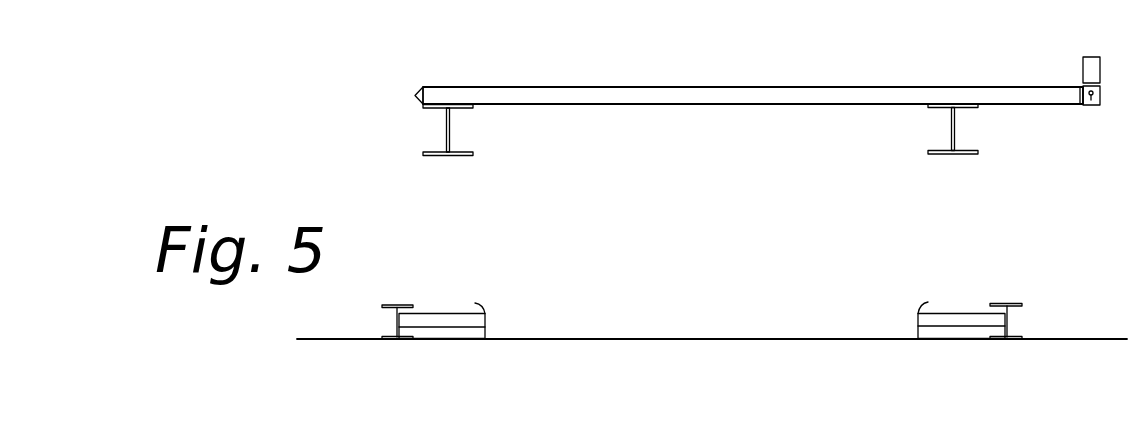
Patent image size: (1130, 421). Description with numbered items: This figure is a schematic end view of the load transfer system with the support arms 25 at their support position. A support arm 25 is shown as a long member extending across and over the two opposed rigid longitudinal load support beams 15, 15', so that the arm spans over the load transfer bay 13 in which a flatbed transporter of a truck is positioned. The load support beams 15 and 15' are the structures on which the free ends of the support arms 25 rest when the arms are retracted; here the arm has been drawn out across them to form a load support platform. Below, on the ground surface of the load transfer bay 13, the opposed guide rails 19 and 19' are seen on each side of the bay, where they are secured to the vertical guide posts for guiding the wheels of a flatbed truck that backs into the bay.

The support arm 25 is at (548, 87).
The load support beam 15' is at (487, 130).
The load support beam 15 is at (915, 131).
The load transfer bay 13 is at (716, 243).
The guide rail 19' is at (474, 311).
The guide rail 19 is at (936, 311).